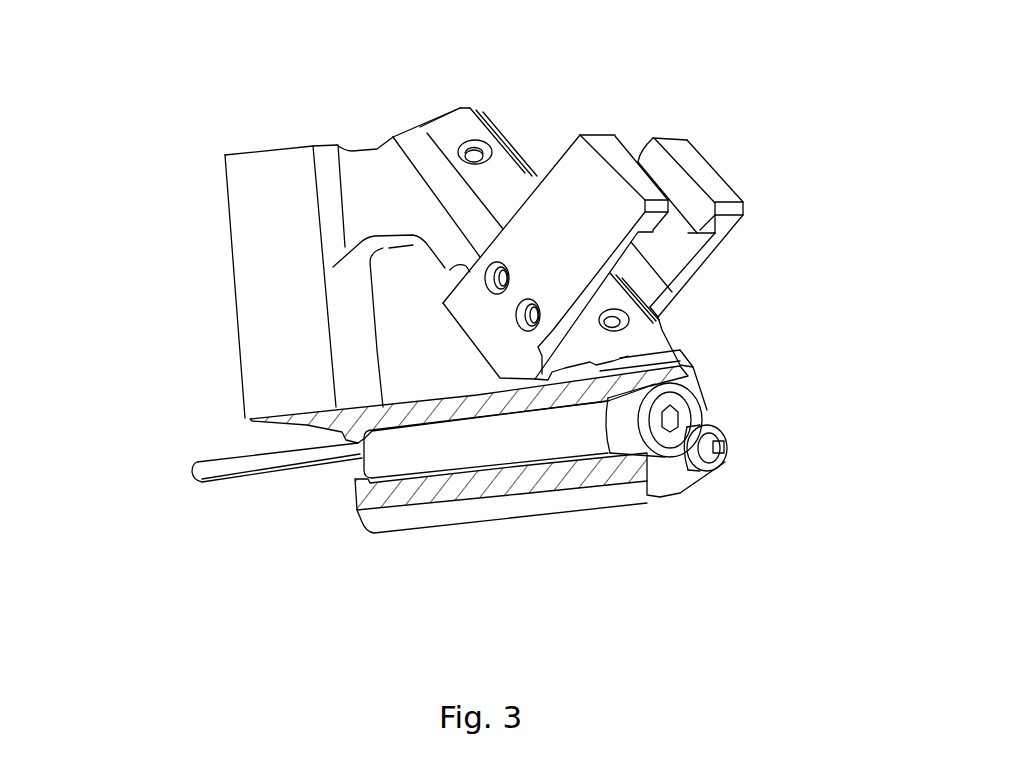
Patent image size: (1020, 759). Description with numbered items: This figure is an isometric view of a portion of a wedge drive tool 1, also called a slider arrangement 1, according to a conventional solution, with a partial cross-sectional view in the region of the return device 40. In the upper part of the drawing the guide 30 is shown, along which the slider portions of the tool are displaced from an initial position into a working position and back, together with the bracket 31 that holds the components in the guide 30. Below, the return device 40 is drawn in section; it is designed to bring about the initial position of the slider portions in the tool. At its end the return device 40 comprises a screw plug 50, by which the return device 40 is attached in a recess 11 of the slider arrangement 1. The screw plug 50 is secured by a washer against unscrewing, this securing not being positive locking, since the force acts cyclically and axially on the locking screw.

The wedge drive tool 1 is at (185, 96).
The guide 30 is at (517, 173).
The bracket 31 is at (672, 255).
The return device 40 is at (486, 442).
The screw plug 50 is at (683, 403).
The recess 11 is at (662, 460).